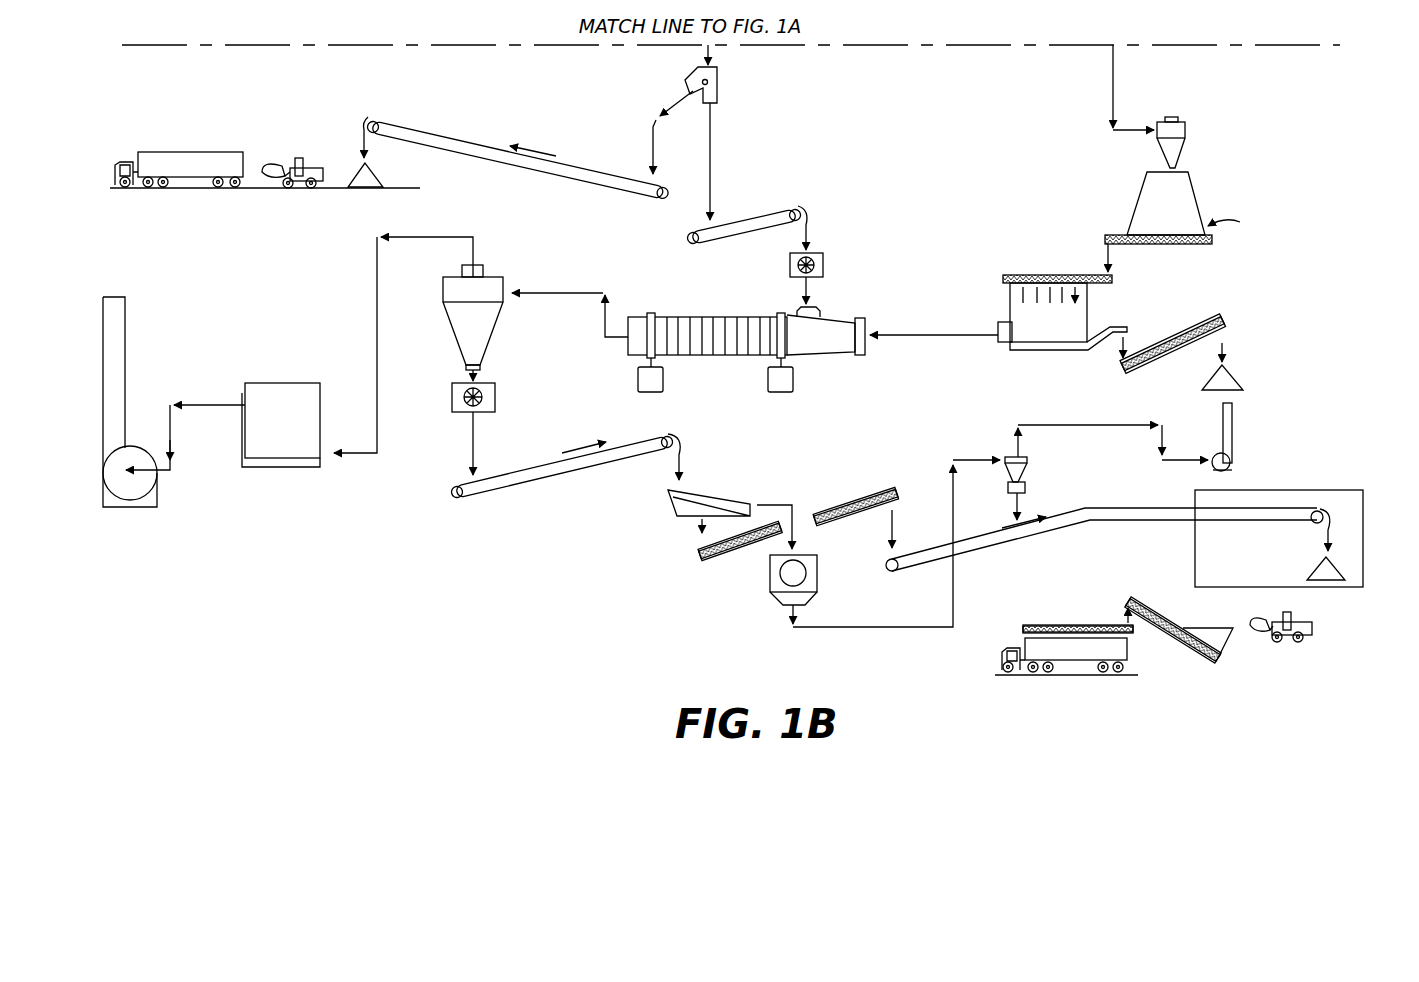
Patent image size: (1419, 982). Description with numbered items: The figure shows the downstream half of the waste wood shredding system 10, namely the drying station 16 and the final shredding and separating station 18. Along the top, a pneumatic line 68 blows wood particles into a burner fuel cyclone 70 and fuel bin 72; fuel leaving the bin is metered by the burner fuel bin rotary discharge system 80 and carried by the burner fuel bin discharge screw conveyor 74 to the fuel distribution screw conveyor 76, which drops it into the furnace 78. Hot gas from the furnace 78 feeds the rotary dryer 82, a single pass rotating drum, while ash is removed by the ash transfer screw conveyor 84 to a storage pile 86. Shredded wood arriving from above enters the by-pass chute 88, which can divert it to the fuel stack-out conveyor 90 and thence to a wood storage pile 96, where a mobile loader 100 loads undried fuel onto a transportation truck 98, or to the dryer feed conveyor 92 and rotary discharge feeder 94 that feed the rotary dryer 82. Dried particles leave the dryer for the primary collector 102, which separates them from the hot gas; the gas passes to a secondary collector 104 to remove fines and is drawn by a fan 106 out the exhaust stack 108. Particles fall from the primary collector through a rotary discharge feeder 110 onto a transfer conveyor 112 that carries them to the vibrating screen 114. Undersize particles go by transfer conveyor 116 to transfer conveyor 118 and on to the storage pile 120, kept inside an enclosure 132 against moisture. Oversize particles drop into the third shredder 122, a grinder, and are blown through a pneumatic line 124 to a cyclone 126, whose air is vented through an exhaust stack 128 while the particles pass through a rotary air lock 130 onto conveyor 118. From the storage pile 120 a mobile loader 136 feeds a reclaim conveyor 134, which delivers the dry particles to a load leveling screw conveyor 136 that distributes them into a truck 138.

The waste wood shredding system 10 is at (327, 520).
The drying station 16 is at (948, 232).
The final shredding and separating station 18 is at (730, 603).
The pneumatic line 68 is at (1115, 78).
The burner fuel cyclone 70 is at (1188, 130).
The burner fuel bin 72 is at (1195, 193).
The burner fuel bin discharge screw conveyor 74 is at (1110, 232).
The fuel distribution screw conveyor 76 is at (1016, 273).
The furnace 78 is at (1087, 312).
The burner fuel bin rotary discharge system 80 is at (1231, 239).
The rotary dryer 82 is at (680, 315).
The ash transfer screw conveyor 84 is at (1185, 325).
The storage pile 86 is at (1235, 365).
The by-pass chute 88 is at (720, 78).
The fuel stack-out conveyor 90 is at (467, 140).
The dryer feed conveyor 92 is at (744, 215).
The rotary discharge feeder 94 is at (825, 256).
The wood storage pile 96 is at (375, 172).
The transportation truck 98 is at (175, 152).
The mobile loader 100 is at (293, 157).
The primary collector 102 is at (493, 270).
The secondary collector 104 is at (258, 383).
The fan 106 is at (133, 505).
The exhaust stack 108 is at (128, 353).
The rotary discharge feeder 110 is at (498, 393).
The transfer conveyor 112 is at (508, 486).
The vibrating screen 114 is at (705, 487).
The transfer conveyor 116 is at (848, 490).
The transfer conveyor 118 is at (1110, 508).
The storage pile 120 is at (1345, 560).
The third shredder 122 is at (820, 590).
The pneumatic line 124 is at (872, 630).
The cyclone 126 is at (1025, 472).
The exhaust stack 128 is at (1235, 418).
The rotary air lock 130 is at (1006, 486).
The enclosure 132 is at (1365, 500).
The reclaim conveyor 134 is at (1190, 642).
The mobile loader / load leveling screw conveyor 136 is at (1050, 624).
The truck 138 is at (1085, 672).